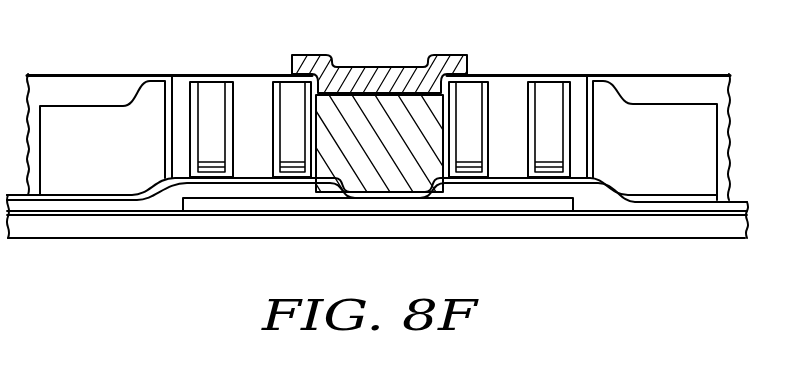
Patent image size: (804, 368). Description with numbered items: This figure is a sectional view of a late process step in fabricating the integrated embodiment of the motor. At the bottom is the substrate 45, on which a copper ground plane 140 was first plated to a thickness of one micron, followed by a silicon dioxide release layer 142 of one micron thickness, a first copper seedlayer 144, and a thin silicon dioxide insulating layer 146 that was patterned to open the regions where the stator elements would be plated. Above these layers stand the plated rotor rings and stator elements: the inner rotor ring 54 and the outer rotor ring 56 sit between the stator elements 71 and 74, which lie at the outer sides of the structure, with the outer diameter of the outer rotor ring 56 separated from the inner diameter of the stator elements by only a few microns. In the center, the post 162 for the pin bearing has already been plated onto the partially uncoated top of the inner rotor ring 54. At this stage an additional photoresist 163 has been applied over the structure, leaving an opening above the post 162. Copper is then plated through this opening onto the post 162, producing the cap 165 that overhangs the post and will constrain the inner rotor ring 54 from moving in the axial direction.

The substrate 45 is at (655, 223).
The inner rotor ring 54 is at (283, 80).
The outer rotor ring 56 is at (211, 80).
The stator element 71 is at (92, 118).
The stator element 74 is at (667, 113).
The copper ground plane 140 is at (563, 205).
The SiO2 release layer 142 is at (520, 190).
The first copper seedlayer 144 is at (430, 193).
The insulating layer 146 is at (87, 203).
The post 162 is at (352, 120).
The additional photoresist 163 is at (247, 97).
The cap 165 is at (400, 82).